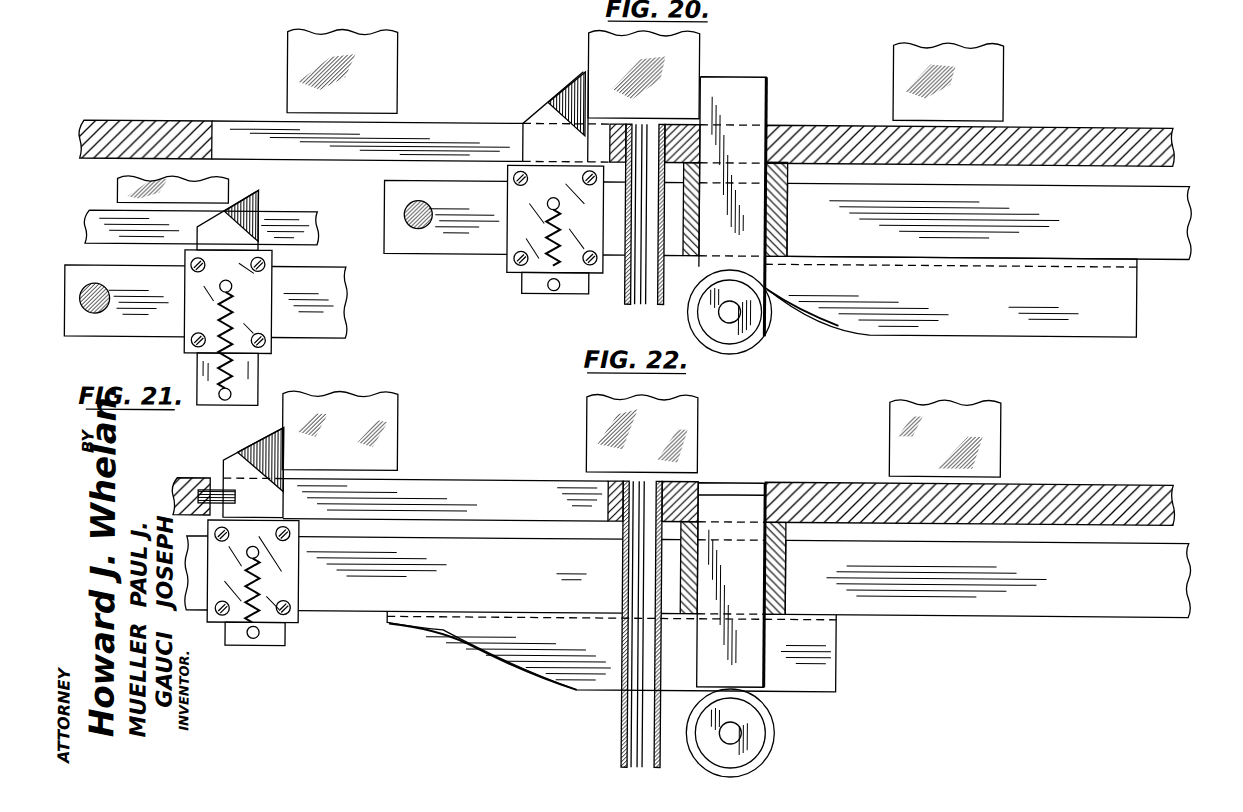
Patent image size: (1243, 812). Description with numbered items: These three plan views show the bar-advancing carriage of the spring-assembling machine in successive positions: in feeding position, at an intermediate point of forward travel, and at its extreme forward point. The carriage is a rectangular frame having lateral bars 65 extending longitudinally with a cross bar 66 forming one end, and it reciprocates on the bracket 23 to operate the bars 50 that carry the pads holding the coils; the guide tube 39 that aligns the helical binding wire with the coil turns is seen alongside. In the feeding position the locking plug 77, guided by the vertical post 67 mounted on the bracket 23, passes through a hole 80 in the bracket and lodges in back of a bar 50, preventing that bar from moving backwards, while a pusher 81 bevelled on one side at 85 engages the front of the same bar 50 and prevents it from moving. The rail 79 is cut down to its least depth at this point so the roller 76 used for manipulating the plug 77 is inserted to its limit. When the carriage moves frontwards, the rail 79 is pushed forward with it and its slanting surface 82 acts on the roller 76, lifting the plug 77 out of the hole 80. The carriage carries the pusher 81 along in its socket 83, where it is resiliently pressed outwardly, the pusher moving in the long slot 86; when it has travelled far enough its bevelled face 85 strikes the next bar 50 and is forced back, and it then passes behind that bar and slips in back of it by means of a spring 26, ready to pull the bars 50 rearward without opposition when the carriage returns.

In FIG. 20, the bracket 23 is at (860, 125).
In FIG. 21, the bracket 23 is at (95, 256).
In FIG. 22, the bracket 23 is at (182, 480).
In FIG. 20, the spring 26 is at (545, 232).
In FIG. 21, the spring 26 is at (222, 312).
In FIG. 22, the spring 26 is at (268, 580).
In FIG. 20, the guide tube 39 is at (626, 288).
In FIG. 22, the guide tube 39 is at (627, 730).
In FIG. 20, the bar 50 is at (397, 52).
In FIG. 21, the bar 50 is at (118, 188).
In FIG. 22, the bar 50 is at (401, 428).
In FIG. 20, the lateral bar 65 is at (488, 248).
In FIG. 21, the lateral bar 65 is at (155, 332).
In FIG. 22, the lateral bar 65 is at (688, 577).
In FIG. 20, the cross bar 66 is at (419, 228).
In FIG. 21, the cross bar 66 is at (97, 314).
In FIG. 20, the vertical post 67 is at (789, 228).
In FIG. 22, the vertical post 67 is at (806, 577).
In FIG. 20, the roller 76 is at (765, 330).
In FIG. 22, the roller 76 is at (780, 736).
In FIG. 20, the locking plug 77 is at (770, 93).
In FIG. 22, the locking plug 77 is at (731, 585).
In FIG. 20, the rail 79 is at (1008, 328).
In FIG. 22, the rail 79 is at (820, 686).
In FIG. 20, the hole 80 is at (770, 128).
In FIG. 22, the hole 80 is at (768, 480).
In FIG. 20, the pusher 81 is at (536, 118).
In FIG. 21, the pusher 81 is at (262, 206).
In FIG. 22, the pusher 81 is at (224, 474).
In FIG. 20, the slanting surface 82 is at (825, 318).
In FIG. 22, the slanting surface 82 is at (497, 652).
In FIG. 20, the socket 83 is at (508, 268).
In FIG. 21, the socket 83 is at (268, 326).
In FIG. 22, the socket 83 is at (280, 620).
In FIG. 20, the bevelled face 85 is at (580, 80).
In FIG. 21, the bevelled face 85 is at (237, 200).
In FIG. 22, the bevelled face 85 is at (263, 452).
In FIG. 20, the long slot 86 is at (465, 130).
In FIG. 21, the long slot 86 is at (318, 230).
In FIG. 22, the long slot 86 is at (505, 490).